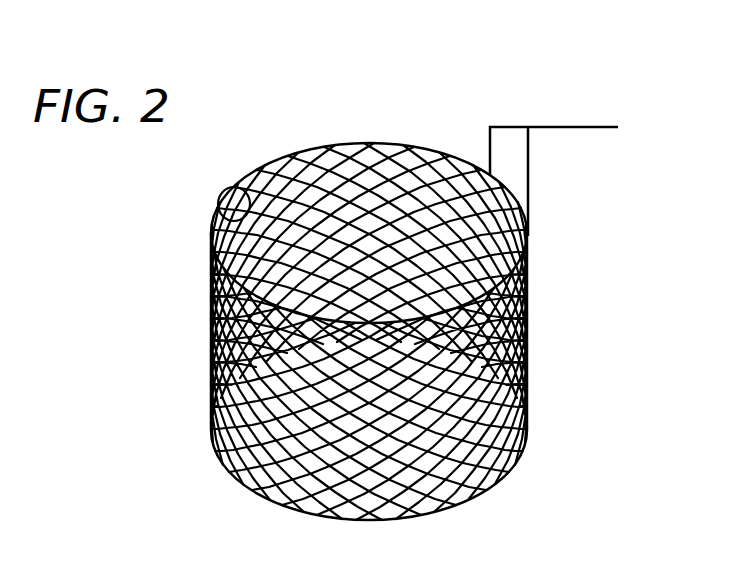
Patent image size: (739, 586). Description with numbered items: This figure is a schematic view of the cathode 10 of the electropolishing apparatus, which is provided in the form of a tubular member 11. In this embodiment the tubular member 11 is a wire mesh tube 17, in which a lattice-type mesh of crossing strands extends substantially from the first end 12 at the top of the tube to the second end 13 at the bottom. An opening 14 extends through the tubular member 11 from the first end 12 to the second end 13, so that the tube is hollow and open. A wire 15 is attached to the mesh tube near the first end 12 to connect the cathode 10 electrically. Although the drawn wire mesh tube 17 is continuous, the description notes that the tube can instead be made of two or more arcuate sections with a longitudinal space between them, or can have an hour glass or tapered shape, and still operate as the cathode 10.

The cathode 10 is at (328, 85).
The tubular member 11 is at (210, 330).
The first end 12 is at (286, 153).
The second end 13 is at (483, 490).
The opening 14 is at (240, 187).
The wire 15 is at (551, 127).
The wire mesh tube 17 is at (290, 468).